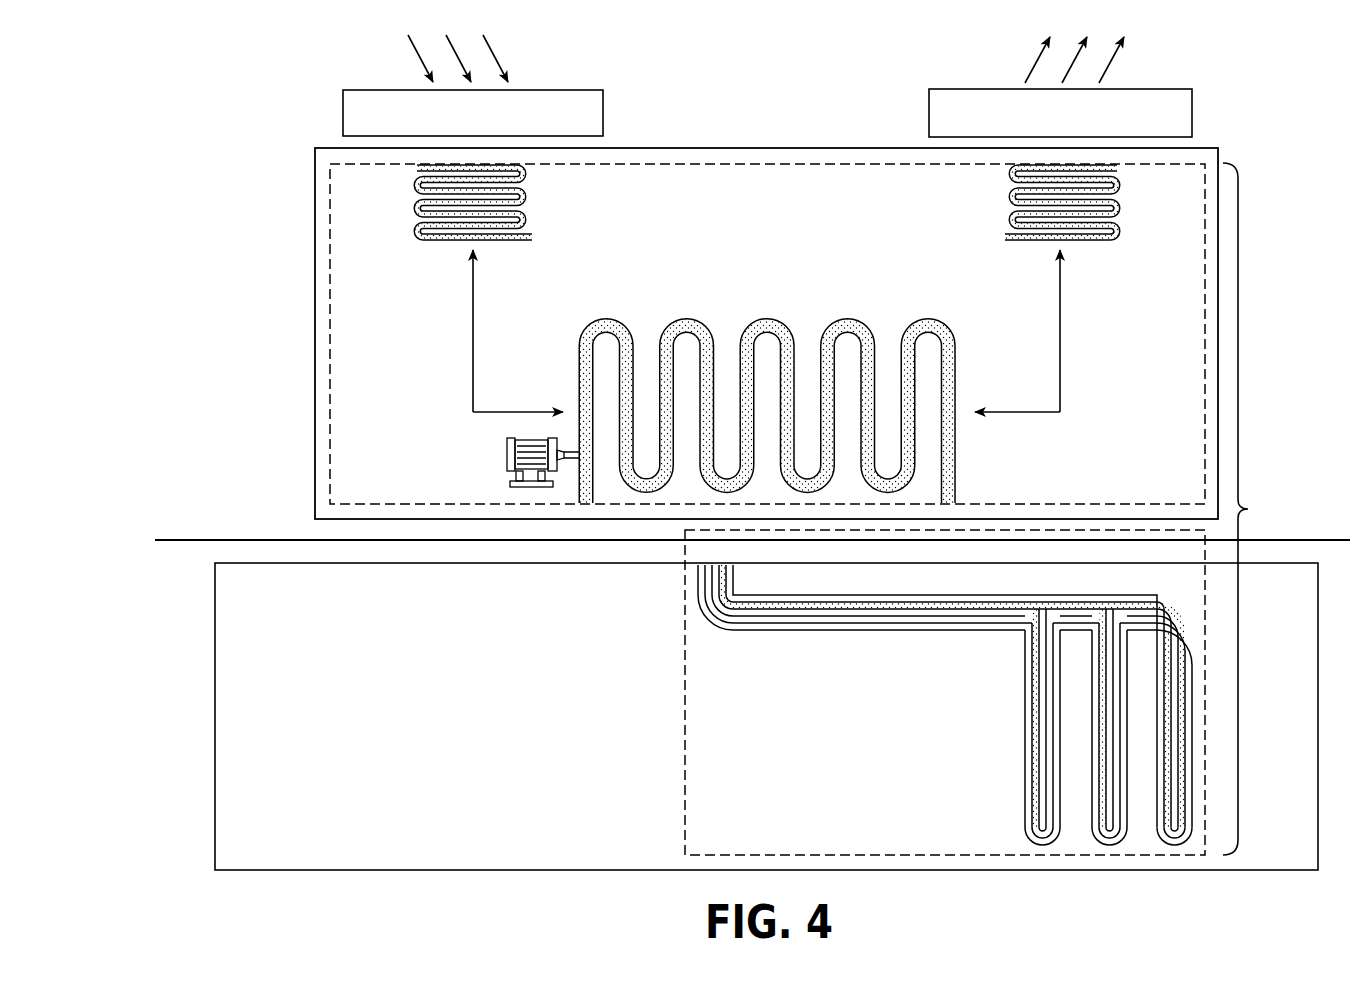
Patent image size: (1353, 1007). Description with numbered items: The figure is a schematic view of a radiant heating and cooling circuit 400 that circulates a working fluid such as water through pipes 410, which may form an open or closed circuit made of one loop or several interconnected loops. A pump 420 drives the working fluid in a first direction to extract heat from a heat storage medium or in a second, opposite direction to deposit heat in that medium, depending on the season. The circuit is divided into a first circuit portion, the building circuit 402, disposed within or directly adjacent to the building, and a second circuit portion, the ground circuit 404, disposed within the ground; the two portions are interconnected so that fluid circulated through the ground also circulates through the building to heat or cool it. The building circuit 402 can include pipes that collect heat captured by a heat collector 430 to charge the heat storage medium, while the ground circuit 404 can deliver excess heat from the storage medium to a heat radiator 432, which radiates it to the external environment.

The radiant heating and cooling circuit 400 is at (1263, 509).
The first circuit portion 402 is at (330, 272).
The second circuit portion 404 is at (1133, 858).
The pipes 410 is at (765, 318).
The pump 420 is at (507, 455).
The heat collector 430 is at (603, 110).
The heat radiator 432 is at (929, 107).